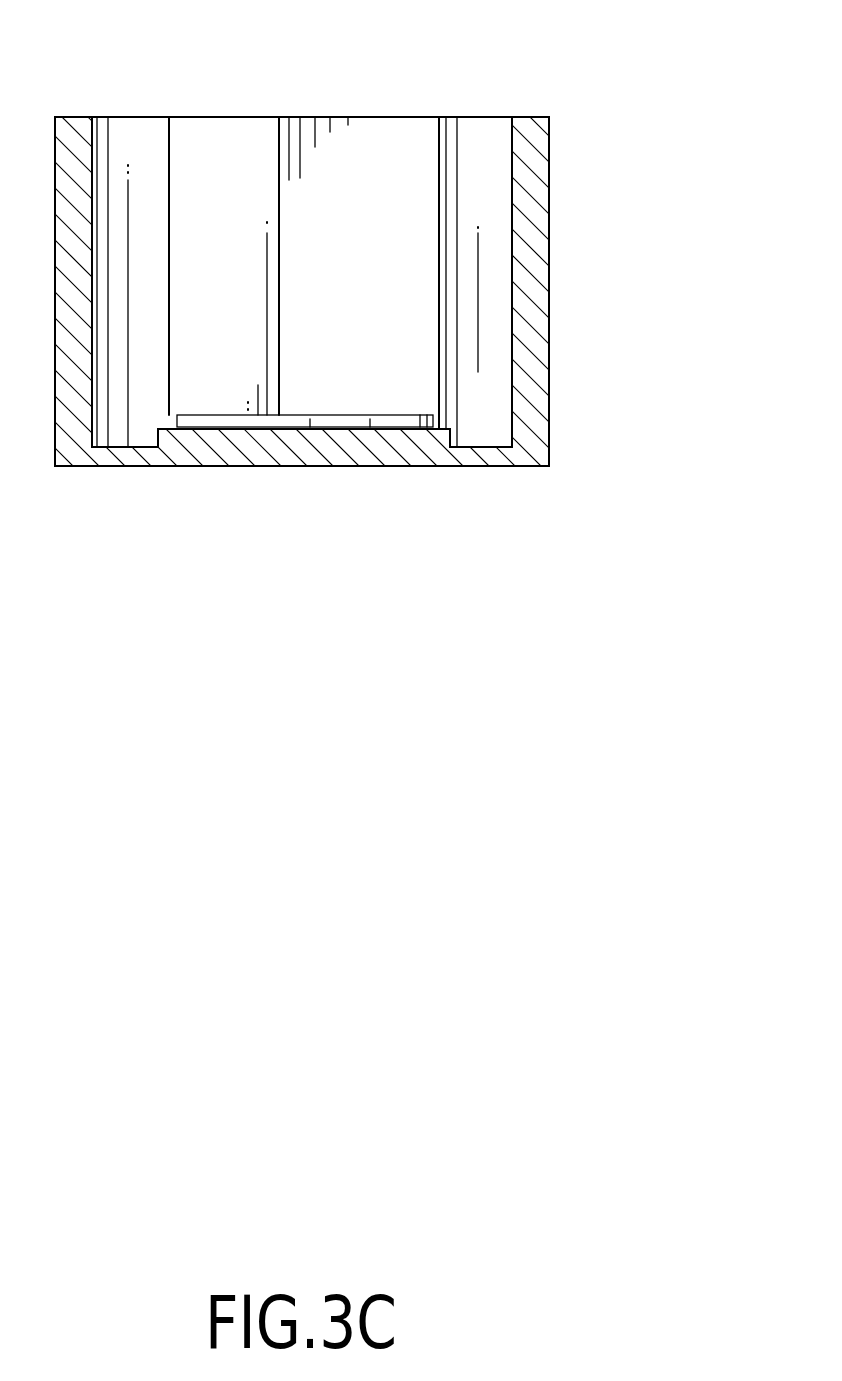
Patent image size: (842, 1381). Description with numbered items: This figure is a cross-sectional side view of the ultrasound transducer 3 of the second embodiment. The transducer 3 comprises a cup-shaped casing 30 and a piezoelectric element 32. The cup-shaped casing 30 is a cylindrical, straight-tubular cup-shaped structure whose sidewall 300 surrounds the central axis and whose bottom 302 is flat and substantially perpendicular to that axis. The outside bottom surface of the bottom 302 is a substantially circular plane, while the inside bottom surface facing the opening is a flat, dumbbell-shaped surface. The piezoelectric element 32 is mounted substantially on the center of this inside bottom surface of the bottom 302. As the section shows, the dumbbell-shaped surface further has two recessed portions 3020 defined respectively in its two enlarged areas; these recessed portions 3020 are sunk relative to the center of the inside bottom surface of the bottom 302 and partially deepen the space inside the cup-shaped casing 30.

The ultrasound transducer 3 is at (322, 25).
The cup-shaped casing 30 is at (537, 250).
The sidewall 300 is at (508, 200).
The bottom 302 is at (410, 457).
The recessed portions 3020 is at (123, 447).
The piezoelectric element 32 is at (343, 416).